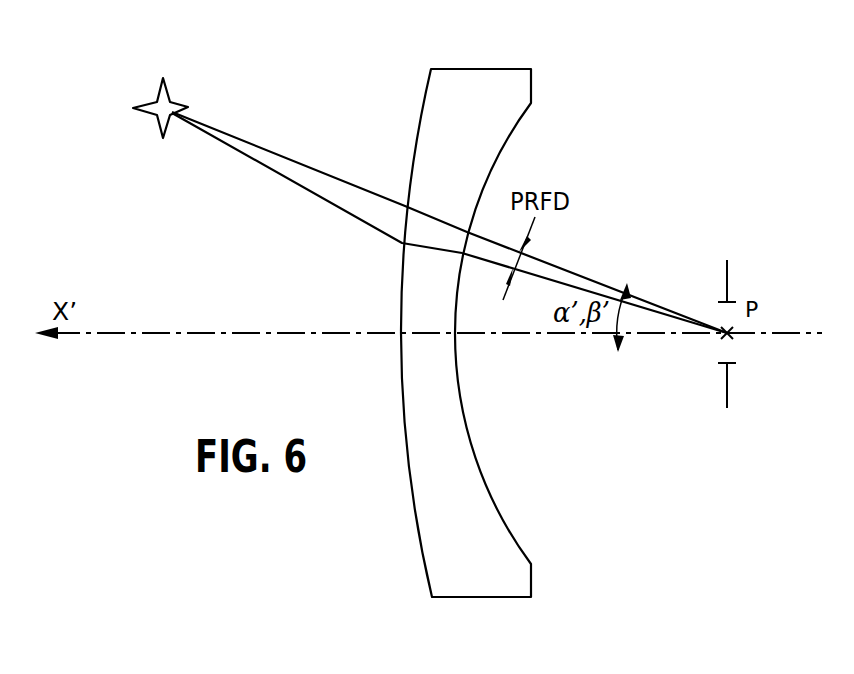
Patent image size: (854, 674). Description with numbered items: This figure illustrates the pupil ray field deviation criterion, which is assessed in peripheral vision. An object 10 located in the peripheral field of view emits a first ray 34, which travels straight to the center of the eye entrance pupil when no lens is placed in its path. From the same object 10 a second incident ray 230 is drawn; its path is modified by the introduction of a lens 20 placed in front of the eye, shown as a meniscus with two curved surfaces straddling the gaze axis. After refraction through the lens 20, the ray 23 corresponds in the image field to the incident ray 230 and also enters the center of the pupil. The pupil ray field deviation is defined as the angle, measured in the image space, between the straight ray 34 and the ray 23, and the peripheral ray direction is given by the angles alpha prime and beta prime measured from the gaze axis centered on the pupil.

The object 10 is at (157, 98).
The lens 20 is at (469, 68).
The first ray 34 is at (298, 162).
The second incident ray 230 is at (303, 190).
The ray in the image field 23 is at (570, 285).